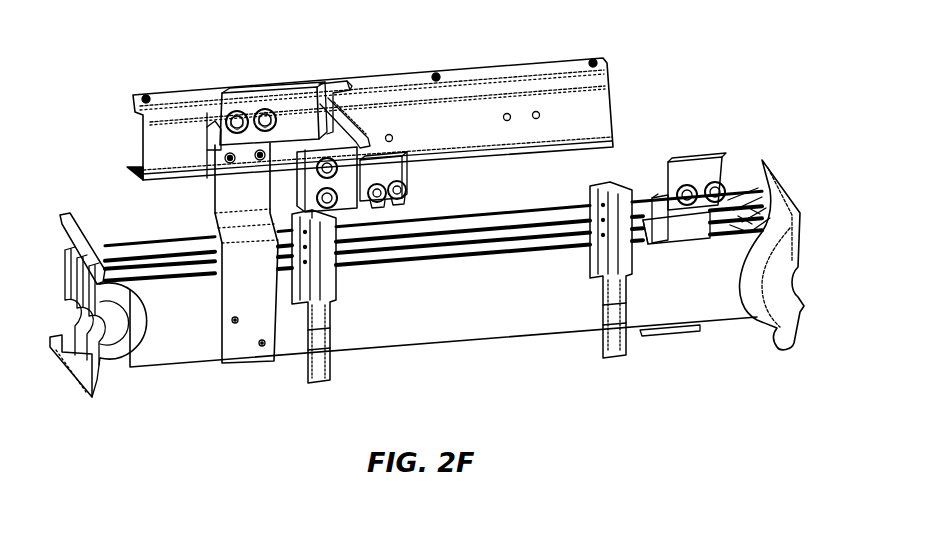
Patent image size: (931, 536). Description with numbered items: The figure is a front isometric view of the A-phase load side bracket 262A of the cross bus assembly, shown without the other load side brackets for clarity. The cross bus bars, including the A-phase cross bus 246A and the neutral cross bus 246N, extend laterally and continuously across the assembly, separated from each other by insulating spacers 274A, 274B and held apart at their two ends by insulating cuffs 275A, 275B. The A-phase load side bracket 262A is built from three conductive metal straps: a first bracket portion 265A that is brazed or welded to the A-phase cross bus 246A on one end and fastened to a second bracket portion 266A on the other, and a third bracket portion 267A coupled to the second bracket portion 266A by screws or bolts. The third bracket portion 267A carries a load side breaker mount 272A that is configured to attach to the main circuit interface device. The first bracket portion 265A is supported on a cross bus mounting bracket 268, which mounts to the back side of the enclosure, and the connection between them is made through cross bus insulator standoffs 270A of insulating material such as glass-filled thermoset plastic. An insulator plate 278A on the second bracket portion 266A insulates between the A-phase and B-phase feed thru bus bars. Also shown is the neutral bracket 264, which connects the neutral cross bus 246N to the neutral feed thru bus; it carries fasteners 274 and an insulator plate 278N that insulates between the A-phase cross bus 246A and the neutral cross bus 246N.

The A-phase load side bracket 262A is at (245, 80).
The second bracket portion 266A is at (325, 82).
The insulator plate 278A is at (360, 116).
The third bracket portion 267A is at (400, 150).
The cross bus mounting bracket 268 is at (542, 62).
The cross bus insulator standoff 270A is at (207, 147).
The first bracket portion 265A is at (213, 200).
The load side breaker mount 272A is at (403, 191).
The neutral bracket 264 is at (694, 160).
The fasteners 274 is at (724, 176).
The neutral cross bus 246N is at (632, 235).
The insulator plate 278N is at (680, 233).
The insulating spacer 274B is at (607, 359).
The insulating cuff 275B is at (787, 340).
The A-phase cross bus 246A is at (165, 368).
The insulating spacer 274A is at (320, 381).
The insulating cuff 275A is at (95, 400).